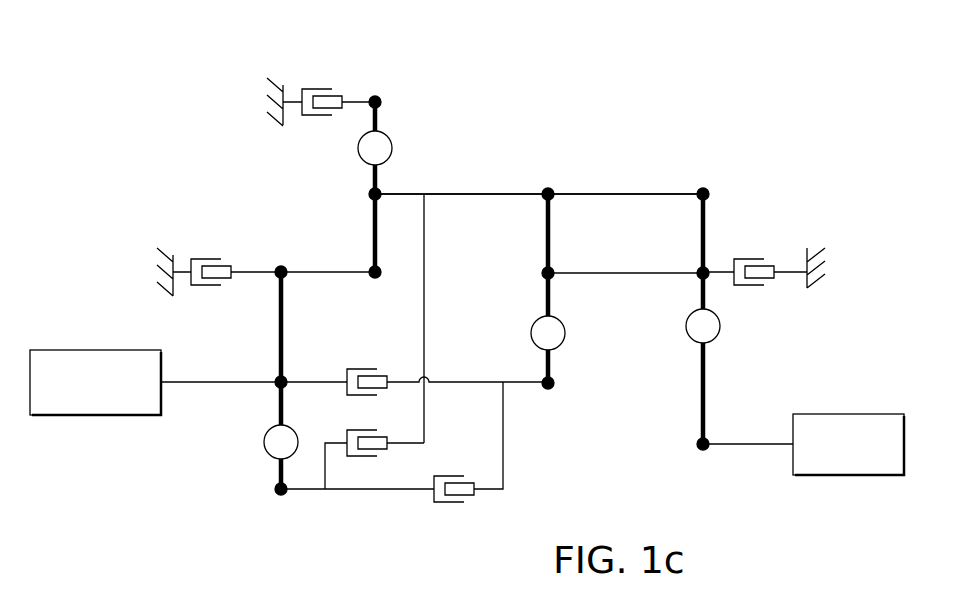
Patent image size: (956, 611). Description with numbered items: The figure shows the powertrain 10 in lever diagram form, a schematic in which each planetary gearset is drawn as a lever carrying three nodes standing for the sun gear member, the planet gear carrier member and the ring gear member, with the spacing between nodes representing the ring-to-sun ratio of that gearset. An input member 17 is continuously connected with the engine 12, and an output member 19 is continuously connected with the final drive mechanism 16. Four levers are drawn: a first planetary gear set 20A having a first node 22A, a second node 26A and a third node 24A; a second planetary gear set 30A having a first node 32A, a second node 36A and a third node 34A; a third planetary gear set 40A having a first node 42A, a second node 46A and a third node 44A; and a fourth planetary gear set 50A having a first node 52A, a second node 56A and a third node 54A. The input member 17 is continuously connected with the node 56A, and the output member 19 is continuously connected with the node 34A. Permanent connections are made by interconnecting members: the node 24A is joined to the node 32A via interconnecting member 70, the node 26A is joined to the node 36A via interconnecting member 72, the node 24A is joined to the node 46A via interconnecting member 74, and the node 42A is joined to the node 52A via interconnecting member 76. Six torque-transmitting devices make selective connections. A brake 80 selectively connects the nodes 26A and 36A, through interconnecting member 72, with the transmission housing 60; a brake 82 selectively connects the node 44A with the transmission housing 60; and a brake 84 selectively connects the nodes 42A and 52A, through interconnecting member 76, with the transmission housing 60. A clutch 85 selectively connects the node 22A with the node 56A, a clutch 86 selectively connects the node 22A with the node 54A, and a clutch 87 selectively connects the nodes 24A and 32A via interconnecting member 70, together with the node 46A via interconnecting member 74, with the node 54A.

The powertrain 10 is at (544, 48).
The engine 12 is at (96, 344).
The final drive mechanism 16 is at (851, 408).
The input member 17 is at (184, 380).
The output member 19 is at (759, 447).
The first planetary gear set 20A is at (547, 397).
The first node 22A is at (551, 381).
The third node 24A is at (546, 197).
The second node 26A is at (546, 276).
The second planetary gear set 30A is at (704, 185).
The first node 32A is at (701, 197).
The third node 34A is at (700, 443).
The second node 36A is at (701, 276).
The third planetary gear set 40A is at (375, 286).
The first node 42A is at (373, 270).
The third node 44A is at (378, 99).
The second node 46A is at (378, 191).
The fourth planetary gear set 50A is at (281, 503).
The first node 52A is at (284, 276).
The third node 54A is at (279, 487).
The second node 56A is at (279, 380).
The transmission housing 60 is at (270, 96).
The interconnecting member 70 is at (620, 192).
The interconnecting member 72 is at (620, 270).
The interconnecting member 74 is at (497, 192).
The interconnecting member 76 is at (313, 270).
The brake 80 is at (749, 255).
The brake 82 is at (340, 86).
The brake 84 is at (229, 256).
The clutch 85 is at (359, 366).
The clutch 86 is at (471, 508).
The clutch 87 is at (384, 462).